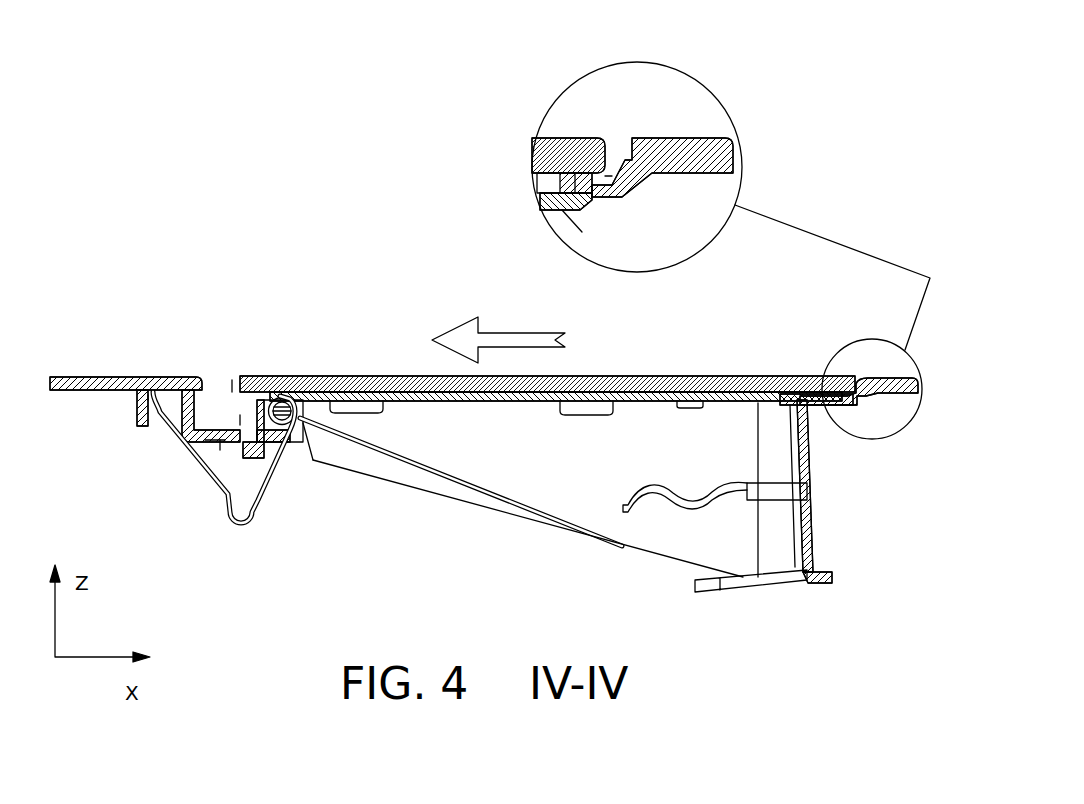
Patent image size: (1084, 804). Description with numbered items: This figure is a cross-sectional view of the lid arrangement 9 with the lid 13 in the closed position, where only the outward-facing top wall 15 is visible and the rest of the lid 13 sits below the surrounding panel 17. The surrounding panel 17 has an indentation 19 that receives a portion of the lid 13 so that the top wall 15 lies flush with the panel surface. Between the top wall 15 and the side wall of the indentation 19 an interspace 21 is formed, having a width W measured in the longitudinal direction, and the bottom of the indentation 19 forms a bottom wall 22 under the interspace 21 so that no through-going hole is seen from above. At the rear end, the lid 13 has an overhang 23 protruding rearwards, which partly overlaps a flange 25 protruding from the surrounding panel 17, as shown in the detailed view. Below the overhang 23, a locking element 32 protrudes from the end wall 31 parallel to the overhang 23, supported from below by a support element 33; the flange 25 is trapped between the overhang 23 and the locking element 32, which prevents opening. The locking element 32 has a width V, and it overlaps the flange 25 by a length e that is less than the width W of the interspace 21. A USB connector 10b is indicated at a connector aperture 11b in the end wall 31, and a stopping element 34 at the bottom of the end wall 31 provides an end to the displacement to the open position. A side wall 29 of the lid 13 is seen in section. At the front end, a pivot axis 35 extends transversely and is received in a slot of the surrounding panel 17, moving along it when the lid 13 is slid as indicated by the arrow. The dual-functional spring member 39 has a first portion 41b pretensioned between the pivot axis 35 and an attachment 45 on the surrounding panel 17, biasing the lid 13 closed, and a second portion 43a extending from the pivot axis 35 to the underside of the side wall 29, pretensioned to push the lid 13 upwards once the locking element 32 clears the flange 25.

The assembly 9 is at (362, 240).
The lid 13 is at (716, 456).
The top wall 15 is at (636, 378).
The surrounding panel 17 is at (129, 376).
The indentation 19 is at (226, 437).
The interspace 21 is at (233, 380).
The bottom wall 22 is at (208, 436).
The overhang 23 is at (562, 165).
The flange 25 is at (607, 178).
The side wall 29 is at (537, 460).
The end wall 31 is at (813, 523).
The locking element 32 is at (577, 197).
The support element 33 is at (817, 423).
The stopping element 34 is at (823, 584).
The pivot axis 35 is at (294, 398).
The spring member 39 is at (242, 412).
The first portion 41b is at (172, 464).
The second portion 43a is at (467, 485).
The attachment 45 is at (148, 397).
The USB connector 10b is at (793, 490).
The connector aperture 11b is at (807, 490).
The width W is at (238, 350).
The width V is at (850, 378).
The length e is at (593, 120).